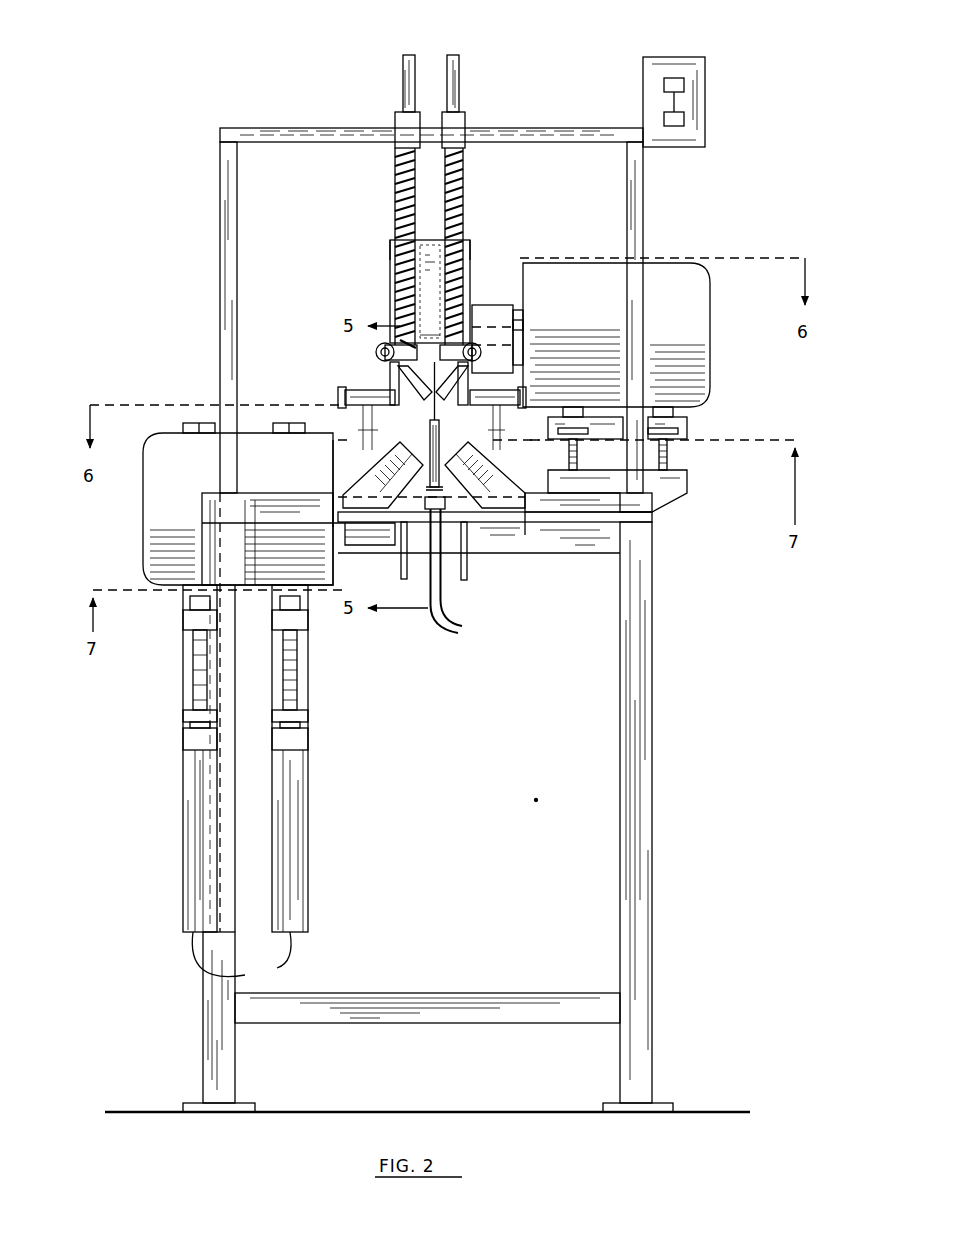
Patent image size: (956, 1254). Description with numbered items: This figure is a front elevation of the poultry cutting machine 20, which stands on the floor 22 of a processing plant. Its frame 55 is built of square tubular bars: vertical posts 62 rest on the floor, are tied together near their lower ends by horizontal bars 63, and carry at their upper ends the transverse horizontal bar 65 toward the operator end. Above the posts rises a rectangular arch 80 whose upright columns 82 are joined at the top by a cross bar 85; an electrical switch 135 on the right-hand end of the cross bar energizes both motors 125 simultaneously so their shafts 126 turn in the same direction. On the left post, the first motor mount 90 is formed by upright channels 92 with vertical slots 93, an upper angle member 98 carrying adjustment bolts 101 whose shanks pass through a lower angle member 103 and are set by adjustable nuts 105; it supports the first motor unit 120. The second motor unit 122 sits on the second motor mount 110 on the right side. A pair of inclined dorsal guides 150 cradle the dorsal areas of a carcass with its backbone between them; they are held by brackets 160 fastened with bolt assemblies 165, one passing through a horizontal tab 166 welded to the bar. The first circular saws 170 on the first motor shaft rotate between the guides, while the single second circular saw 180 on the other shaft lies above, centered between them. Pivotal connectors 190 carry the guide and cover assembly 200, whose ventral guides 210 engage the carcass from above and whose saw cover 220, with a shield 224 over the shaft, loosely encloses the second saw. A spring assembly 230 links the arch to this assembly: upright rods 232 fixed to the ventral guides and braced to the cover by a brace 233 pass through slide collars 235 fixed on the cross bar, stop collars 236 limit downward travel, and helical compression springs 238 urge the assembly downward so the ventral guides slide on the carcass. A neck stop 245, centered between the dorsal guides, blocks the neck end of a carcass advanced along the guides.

The poultry cutting machine 20 is at (172, 378).
The floor 22 is at (160, 1110).
The frame 55 is at (443, 817).
The vertical posts 62 is at (641, 902).
The horizontal bars 63 is at (450, 1018).
The transverse horizontal bar 65 is at (598, 523).
The rectangular arch 80 is at (431, 96).
The upright columns 82 is at (222, 175).
The cross bar 85 is at (342, 128).
The first motor mount 90 is at (235, 781).
The upright channels 92 is at (241, 955).
The vertical slot 93 is at (293, 880).
The upper angle member 98 is at (302, 618).
The adjustment bolts 101 is at (283, 675).
The lower angle member 103 is at (302, 740).
The adjustable nuts 105 is at (300, 728).
The second motor mount 110 is at (702, 412).
The first motor unit 120 is at (140, 548).
The second motor unit 122 is at (712, 300).
The motor 125 is at (190, 476).
The shaft 126 is at (522, 318).
The electrical switch 135 is at (700, 72).
The dorsal guides 150 is at (390, 488).
The brackets 160 is at (520, 530).
The bolt assemblies 165 is at (427, 563).
The horizontal tab 166 is at (385, 545).
The first circular saws 170 is at (463, 576).
The second circular saw 180 is at (462, 228).
The pivotal connectors 190 is at (365, 388).
The guide and cover assembly 200 is at (410, 425).
The ventral guides 210 is at (442, 398).
The saw cover 220 is at (388, 250).
The shield 224 is at (480, 304).
The spring assembly 230 is at (395, 175).
The upright rods 232 is at (458, 52).
The brace 233 is at (455, 343).
The slide collar 235 is at (458, 138).
The stop collar 236 is at (455, 85).
The helical compression springs 238 is at (465, 178).
The neck stop 245 is at (430, 424).